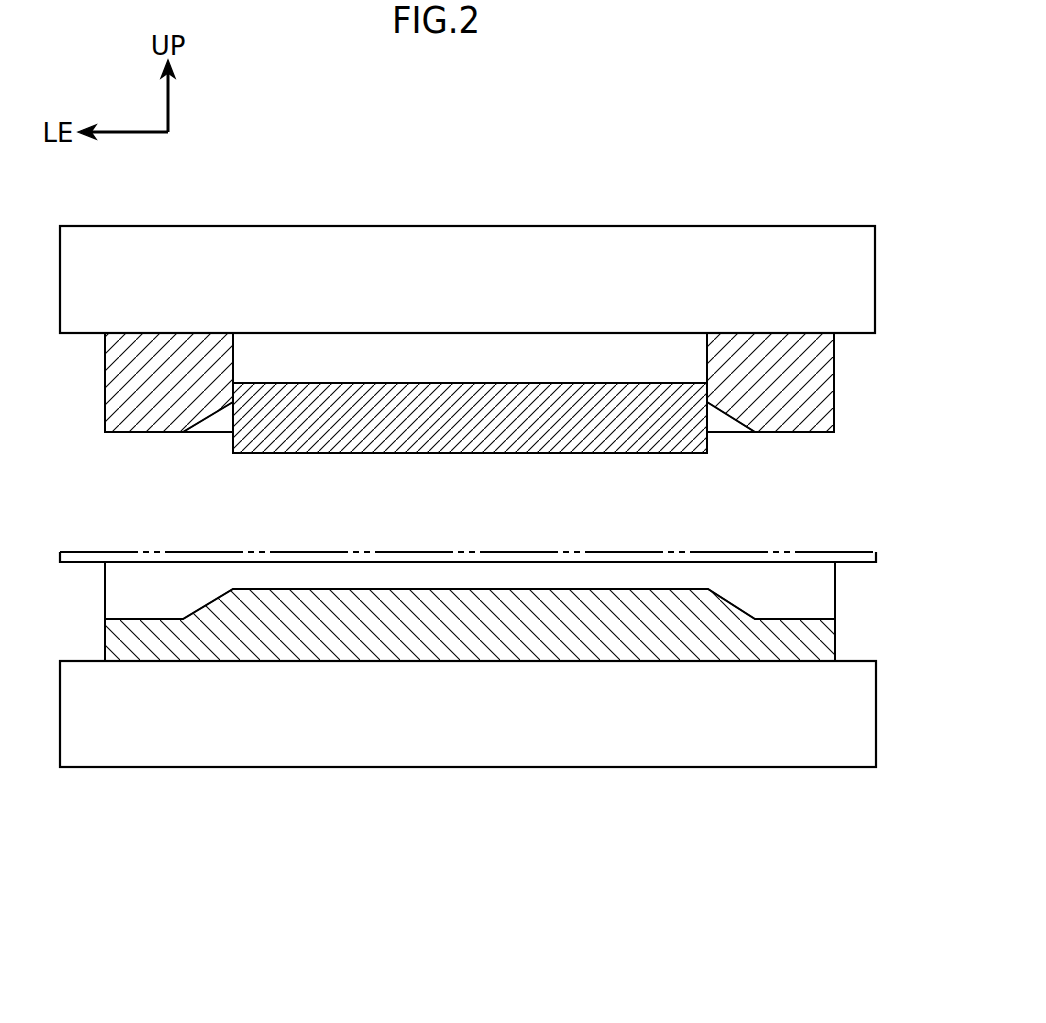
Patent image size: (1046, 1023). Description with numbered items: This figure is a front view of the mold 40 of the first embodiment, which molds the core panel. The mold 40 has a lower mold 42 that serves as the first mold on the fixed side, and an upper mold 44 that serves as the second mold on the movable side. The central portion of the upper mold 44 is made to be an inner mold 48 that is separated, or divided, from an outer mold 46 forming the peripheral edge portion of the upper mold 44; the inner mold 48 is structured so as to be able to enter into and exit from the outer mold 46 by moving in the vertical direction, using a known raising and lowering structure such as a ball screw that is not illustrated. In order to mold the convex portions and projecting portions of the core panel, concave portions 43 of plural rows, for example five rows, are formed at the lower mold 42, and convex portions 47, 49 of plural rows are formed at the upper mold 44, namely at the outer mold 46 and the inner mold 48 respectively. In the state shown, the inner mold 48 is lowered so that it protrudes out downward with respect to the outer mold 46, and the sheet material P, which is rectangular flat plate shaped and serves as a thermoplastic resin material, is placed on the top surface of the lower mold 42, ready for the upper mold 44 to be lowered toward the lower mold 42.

The mold 40 is at (676, 186).
The lower mold 42 is at (723, 770).
The concave portions 43 is at (350, 589).
The upper mold 44 is at (257, 223).
The outer mold 46 is at (101, 384).
The convex portions 47 is at (790, 418).
The inner mold 48 is at (619, 456).
The convex portions 49 is at (407, 436).
The sheet material P is at (856, 518).